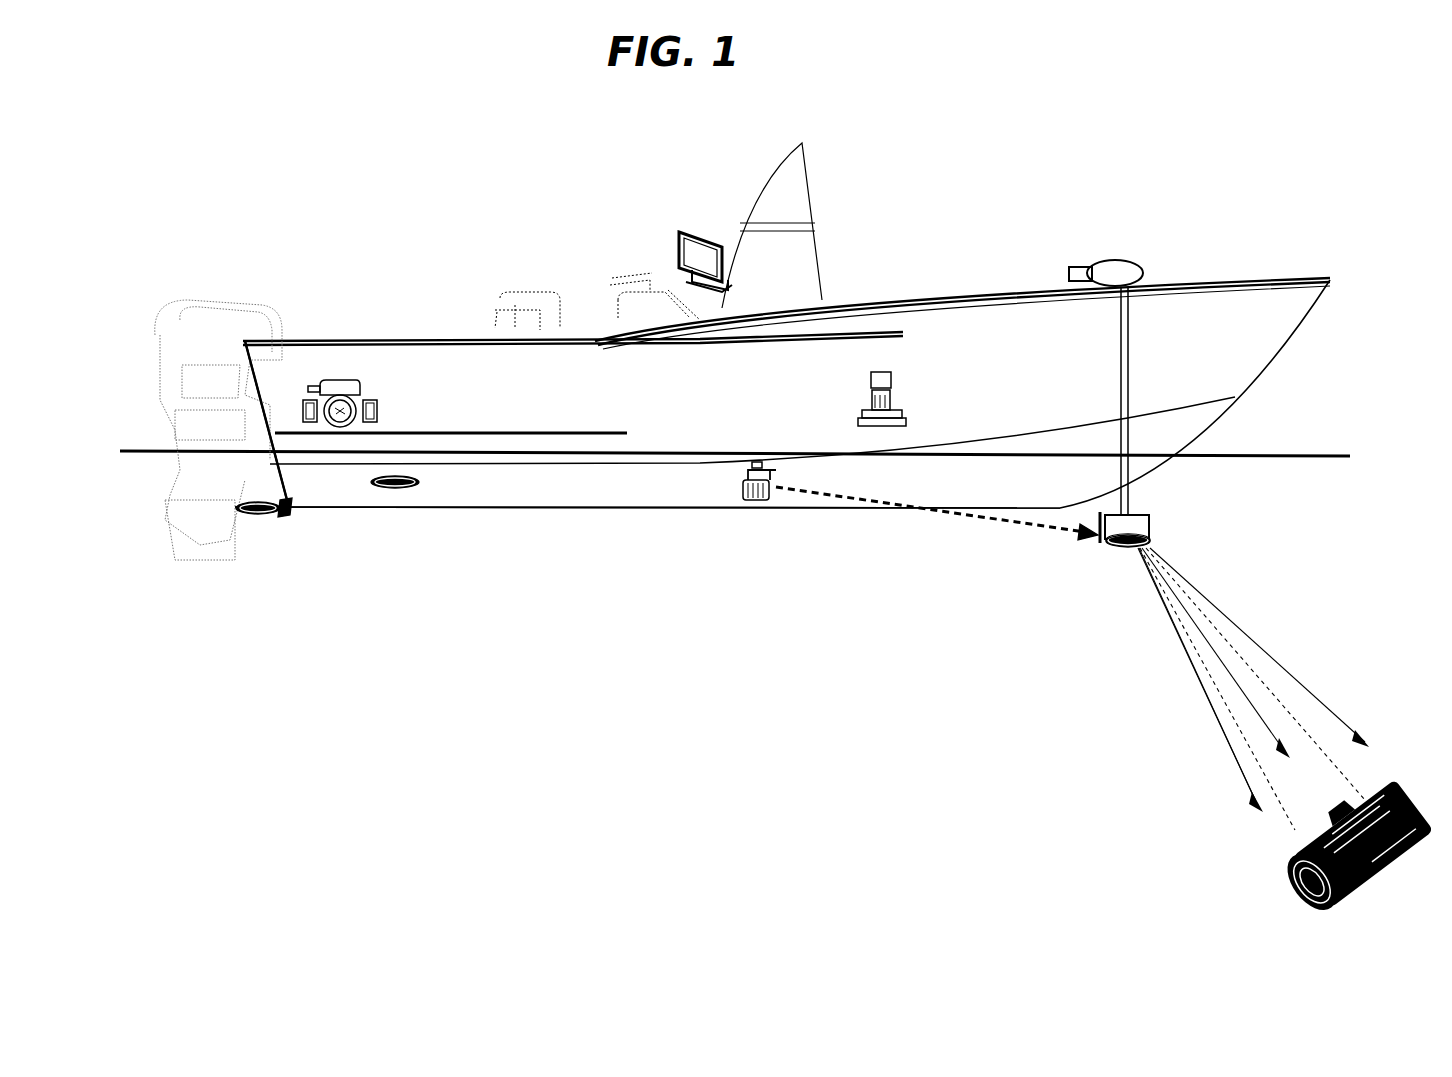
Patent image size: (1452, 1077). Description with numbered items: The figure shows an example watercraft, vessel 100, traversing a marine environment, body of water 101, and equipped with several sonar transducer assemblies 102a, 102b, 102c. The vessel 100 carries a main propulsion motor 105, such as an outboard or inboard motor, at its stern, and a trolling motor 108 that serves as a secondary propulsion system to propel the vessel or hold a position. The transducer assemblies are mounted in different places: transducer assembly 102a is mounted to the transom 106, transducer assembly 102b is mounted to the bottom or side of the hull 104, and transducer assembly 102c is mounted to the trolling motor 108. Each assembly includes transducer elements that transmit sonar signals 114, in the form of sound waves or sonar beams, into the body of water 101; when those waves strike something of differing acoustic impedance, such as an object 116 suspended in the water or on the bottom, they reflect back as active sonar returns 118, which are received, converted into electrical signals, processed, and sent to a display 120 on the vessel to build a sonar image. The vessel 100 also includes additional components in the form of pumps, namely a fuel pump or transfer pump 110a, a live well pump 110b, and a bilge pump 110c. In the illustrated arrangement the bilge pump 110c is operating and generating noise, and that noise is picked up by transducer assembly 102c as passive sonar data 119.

The vessel 100 is at (1022, 287).
The body of water 101 is at (350, 759).
The transducer assembly 102a is at (260, 514).
The transducer assembly 102b is at (390, 488).
The transducer assembly 102c is at (1130, 547).
The hull 104 is at (556, 506).
The main propulsion motor 105 is at (185, 312).
The transom 106 is at (256, 380).
The trolling motor 108 is at (1140, 526).
The fuel pump or transfer pump 110a is at (355, 381).
The live well pump 110b is at (888, 372).
The bilge pump 110c is at (745, 500).
The sonar signals 114 is at (1208, 697).
The object 116 is at (1300, 858).
The active sonar returns 118 is at (1230, 638).
The passive sonar data 119 is at (937, 516).
The display 120 is at (681, 234).